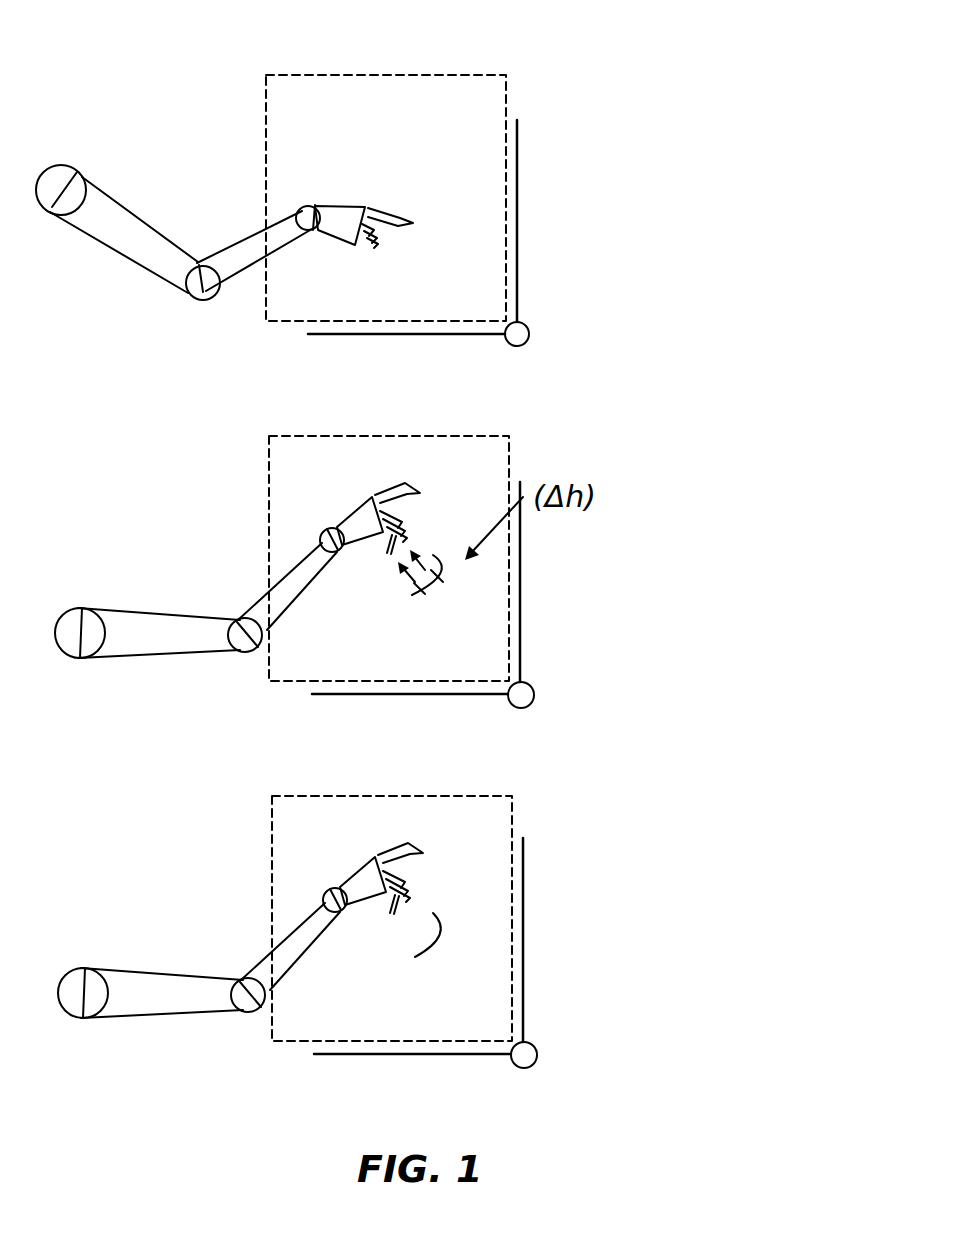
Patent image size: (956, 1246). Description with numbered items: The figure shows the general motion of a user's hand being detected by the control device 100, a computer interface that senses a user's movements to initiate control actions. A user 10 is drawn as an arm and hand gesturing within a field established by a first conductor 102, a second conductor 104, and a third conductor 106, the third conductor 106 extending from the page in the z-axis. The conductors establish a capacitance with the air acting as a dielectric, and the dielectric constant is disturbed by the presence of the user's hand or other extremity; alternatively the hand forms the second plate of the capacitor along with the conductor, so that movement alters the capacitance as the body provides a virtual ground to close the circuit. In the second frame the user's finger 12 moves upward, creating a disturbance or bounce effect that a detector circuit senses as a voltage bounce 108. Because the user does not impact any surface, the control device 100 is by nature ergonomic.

The user 10 is at (174, 232).
The finger 12 is at (378, 213).
The control device 100 is at (482, 230).
The first conductor 102 is at (563, 218).
The second conductor 104 is at (406, 308).
The third conductor 106 is at (562, 320).
The voltage bounce 108 is at (462, 100).